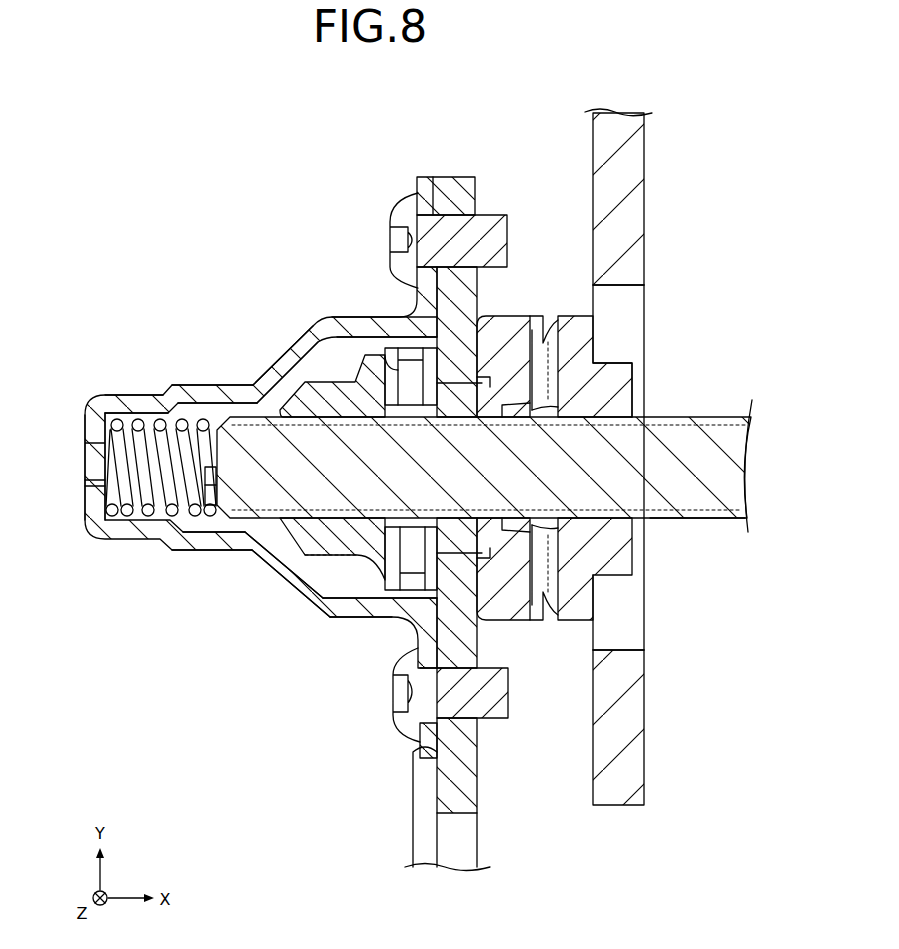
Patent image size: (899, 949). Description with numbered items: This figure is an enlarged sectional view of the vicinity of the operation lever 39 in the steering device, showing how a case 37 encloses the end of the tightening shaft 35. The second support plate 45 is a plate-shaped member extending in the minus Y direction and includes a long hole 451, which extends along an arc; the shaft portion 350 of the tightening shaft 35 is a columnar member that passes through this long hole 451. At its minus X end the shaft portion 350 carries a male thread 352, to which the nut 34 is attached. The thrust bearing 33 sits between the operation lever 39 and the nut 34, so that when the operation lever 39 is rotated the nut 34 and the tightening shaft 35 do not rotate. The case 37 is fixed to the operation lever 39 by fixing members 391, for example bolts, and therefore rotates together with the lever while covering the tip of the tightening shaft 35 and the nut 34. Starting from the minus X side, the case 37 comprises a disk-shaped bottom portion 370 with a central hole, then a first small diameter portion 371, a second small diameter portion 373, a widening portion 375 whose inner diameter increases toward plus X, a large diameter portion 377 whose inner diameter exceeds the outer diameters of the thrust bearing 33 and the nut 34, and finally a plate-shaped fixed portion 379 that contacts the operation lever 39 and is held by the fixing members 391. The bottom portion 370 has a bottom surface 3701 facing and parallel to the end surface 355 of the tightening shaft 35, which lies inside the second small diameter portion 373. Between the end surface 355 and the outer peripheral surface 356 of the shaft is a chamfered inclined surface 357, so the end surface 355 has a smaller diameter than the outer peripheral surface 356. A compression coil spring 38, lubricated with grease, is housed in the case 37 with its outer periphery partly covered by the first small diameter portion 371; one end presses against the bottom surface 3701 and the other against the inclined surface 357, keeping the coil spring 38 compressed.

The thrust bearing 33 is at (398, 348).
The nut 34 is at (347, 543).
The tightening shaft 35 is at (713, 406).
The shaft portion 350 is at (682, 503).
The male thread 352 is at (322, 522).
The end surface 355 is at (185, 522).
The outer peripheral surface 356 is at (280, 522).
The inclined surface 357 is at (215, 522).
The case 37 is at (97, 397).
The bottom portion 370 is at (95, 440).
The bottom surface 3701 is at (98, 492).
The first small diameter portion 371 is at (150, 400).
The second small diameter portion 373 is at (208, 390).
The widening portion 375 is at (280, 362).
The large diameter portion 377 is at (352, 330).
The fixed portion 379 is at (445, 178).
The coil spring 38 is at (138, 522).
The operation lever 39 is at (440, 792).
The fixing members 391 is at (490, 222).
The second support plate 45 is at (640, 158).
The long hole 451 is at (640, 304).